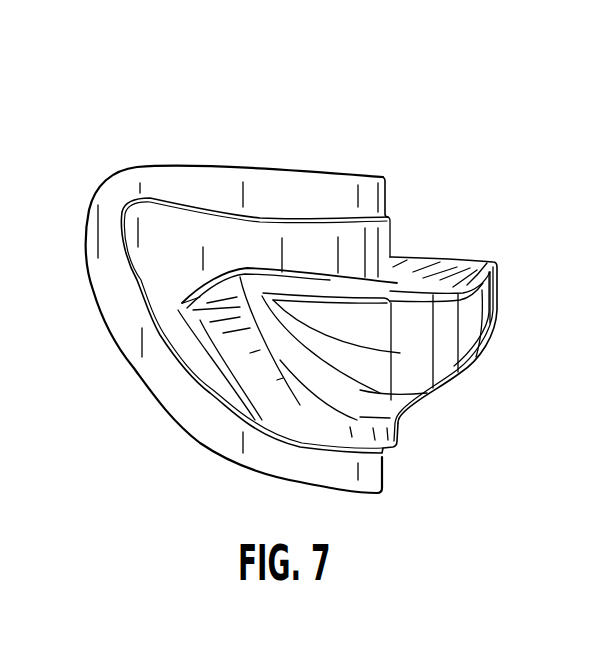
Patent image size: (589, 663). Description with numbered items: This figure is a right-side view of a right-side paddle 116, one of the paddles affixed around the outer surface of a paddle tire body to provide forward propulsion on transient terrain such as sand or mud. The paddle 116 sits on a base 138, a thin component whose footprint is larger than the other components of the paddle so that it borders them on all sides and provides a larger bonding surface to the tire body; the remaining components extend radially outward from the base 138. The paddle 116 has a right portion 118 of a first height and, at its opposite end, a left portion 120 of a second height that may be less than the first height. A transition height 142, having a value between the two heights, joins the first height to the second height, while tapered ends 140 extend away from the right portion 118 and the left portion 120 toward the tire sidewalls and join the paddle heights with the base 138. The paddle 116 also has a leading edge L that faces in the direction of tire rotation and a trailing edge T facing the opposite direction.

The right-side paddle 116 is at (326, 248).
The base 138 is at (110, 195).
The tapered ends 140 is at (222, 320).
The right portion 118 is at (501, 267).
The transition height 142 is at (463, 333).
The left portion 120 is at (410, 340).
The leading edge L is at (347, 172).
The trailing edge T is at (374, 497).